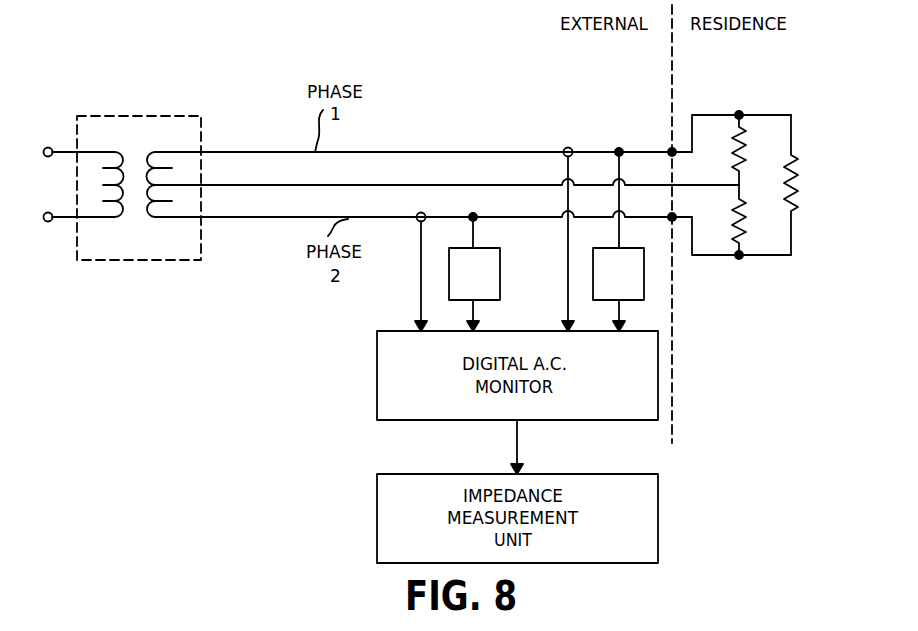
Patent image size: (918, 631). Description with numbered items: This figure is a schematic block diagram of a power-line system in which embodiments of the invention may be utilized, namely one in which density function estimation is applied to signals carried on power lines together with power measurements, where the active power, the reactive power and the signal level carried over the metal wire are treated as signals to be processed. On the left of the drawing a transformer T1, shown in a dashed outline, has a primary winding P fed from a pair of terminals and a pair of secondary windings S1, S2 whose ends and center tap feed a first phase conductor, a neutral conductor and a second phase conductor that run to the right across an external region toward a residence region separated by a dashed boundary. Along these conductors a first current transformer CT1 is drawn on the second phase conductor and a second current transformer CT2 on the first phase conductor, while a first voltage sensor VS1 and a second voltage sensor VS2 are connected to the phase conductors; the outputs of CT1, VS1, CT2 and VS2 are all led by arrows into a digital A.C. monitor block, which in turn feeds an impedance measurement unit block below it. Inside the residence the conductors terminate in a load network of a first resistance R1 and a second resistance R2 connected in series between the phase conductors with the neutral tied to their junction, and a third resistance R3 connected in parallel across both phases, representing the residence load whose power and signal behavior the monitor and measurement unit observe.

The transformer T1 is at (136, 116).
The primary winding P is at (112, 185).
The secondary winding 1 S1 is at (158, 168).
The secondary winding 2 S2 is at (165, 200).
The current transformer 1 CT1 is at (421, 212).
The current transformer 2 CT2 is at (567, 147).
The voltage sensor 1 VS1 is at (474, 272).
The voltage sensor 2 VS2 is at (618, 239).
The residence load resistance 1 R1 is at (752, 148).
The residence load resistance 2 R2 is at (752, 222).
The residence load resistance 3 R3 is at (805, 185).